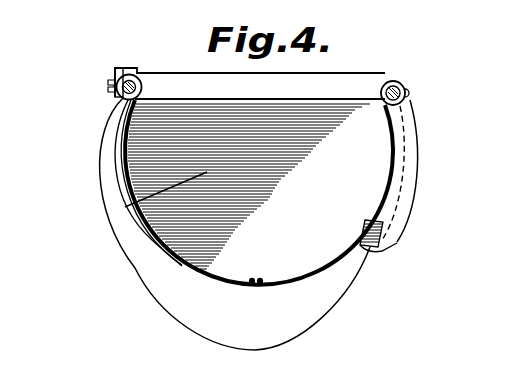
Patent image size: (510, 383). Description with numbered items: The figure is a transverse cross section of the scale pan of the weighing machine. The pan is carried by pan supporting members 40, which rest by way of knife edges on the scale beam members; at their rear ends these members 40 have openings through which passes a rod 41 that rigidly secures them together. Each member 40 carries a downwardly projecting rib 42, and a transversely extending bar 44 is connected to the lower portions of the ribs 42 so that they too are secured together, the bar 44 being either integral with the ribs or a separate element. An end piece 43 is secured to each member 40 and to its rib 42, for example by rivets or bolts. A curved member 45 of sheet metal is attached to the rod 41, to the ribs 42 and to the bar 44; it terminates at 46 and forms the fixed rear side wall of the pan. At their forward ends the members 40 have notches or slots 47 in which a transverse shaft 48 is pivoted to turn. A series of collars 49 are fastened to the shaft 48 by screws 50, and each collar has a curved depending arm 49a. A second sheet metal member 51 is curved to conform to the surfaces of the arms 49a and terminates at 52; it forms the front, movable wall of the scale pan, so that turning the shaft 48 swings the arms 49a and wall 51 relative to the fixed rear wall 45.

The pan supporting member 40 is at (287, 93).
The rod 41 is at (398, 90).
The downwardly projecting rib 42 is at (400, 202).
The end piece 43 is at (207, 172).
The transversely extending bar 44 is at (383, 242).
The curved member 45 is at (390, 185).
The terminating edge of curved member 46 is at (262, 279).
The notch or slot 47 is at (125, 68).
The transverse shaft 48 is at (117, 96).
The collar 49 is at (122, 104).
The curved depending arm 49a is at (123, 165).
The screw 50 is at (108, 88).
The front wall member 51 is at (172, 215).
The terminating edge of front wall member 52 is at (252, 279).